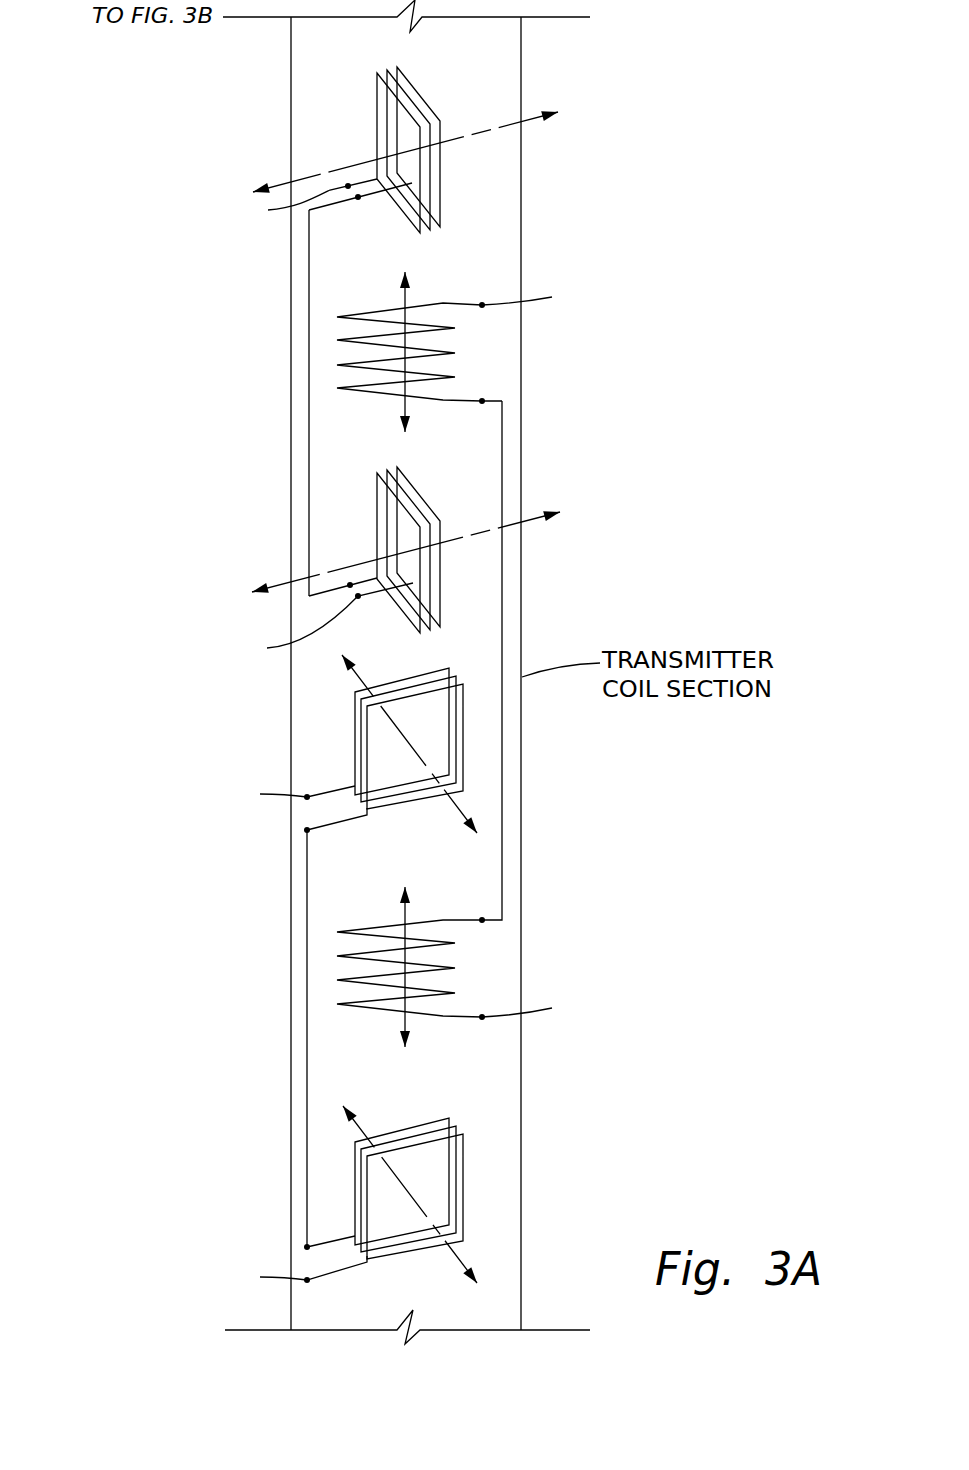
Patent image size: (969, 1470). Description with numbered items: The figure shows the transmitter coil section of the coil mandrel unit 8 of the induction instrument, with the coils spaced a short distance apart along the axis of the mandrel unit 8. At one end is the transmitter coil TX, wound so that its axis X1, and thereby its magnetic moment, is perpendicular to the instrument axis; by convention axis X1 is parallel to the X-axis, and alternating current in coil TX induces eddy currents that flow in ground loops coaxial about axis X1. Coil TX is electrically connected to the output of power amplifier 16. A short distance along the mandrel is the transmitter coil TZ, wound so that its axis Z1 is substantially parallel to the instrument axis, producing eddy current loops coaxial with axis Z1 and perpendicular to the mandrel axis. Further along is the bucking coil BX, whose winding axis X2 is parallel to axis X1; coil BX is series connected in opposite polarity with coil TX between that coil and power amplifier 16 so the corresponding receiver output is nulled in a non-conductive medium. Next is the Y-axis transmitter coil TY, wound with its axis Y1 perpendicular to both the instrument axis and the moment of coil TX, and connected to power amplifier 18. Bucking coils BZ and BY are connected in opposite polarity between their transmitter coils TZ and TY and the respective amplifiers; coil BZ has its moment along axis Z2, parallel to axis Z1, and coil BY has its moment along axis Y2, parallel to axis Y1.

The coil mandrel unit 8 is at (605, 571).
The Y-axis bucking coil BY is at (418, 97).
The winding axis of bucking coil BY Y2 is at (462, 137).
The Z-axis bucking coil BZ is at (388, 396).
The winding axis of bucking coil BZ Z2 is at (403, 301).
The Y-axis transmitter coil TY is at (417, 498).
The winding axis of transmitter coil TY Y1 is at (462, 537).
The X-axis bucking coil BX is at (400, 681).
The winding axis of bucking coil BX X2 is at (446, 793).
The Z-axis transmitter coil TZ is at (388, 1011).
The winding axis of transmitter coil TZ Z1 is at (403, 916).
The X-axis transmitter coil TX is at (400, 1131).
The winding axis of transmitter coil TX X1 is at (446, 1243).
The power amplifier 18 is at (409, 601).
The power amplifier 16 is at (200, 1033).